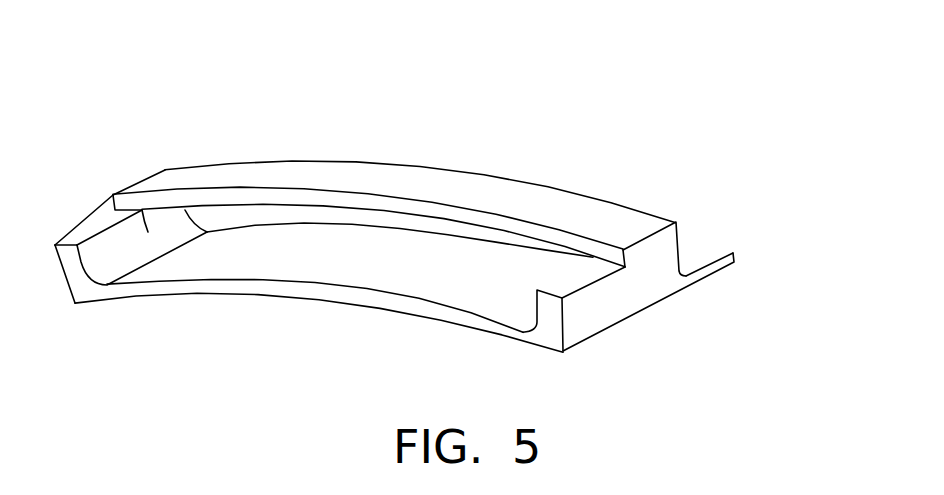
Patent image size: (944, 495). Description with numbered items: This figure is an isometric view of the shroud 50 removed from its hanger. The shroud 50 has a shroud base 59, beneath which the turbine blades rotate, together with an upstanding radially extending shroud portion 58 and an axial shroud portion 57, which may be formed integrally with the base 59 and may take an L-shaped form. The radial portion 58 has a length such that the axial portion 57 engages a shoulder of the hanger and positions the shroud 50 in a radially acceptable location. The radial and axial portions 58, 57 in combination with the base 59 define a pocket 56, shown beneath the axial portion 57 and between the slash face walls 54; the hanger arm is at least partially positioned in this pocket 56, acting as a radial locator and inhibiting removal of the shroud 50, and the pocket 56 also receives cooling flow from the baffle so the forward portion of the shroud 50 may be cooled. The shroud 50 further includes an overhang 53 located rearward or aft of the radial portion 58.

The shroud 50 is at (317, 142).
The overhang 53 is at (720, 266).
The slash face walls 54 is at (603, 313).
The pocket 56 is at (437, 227).
The axial shroud portion 57 is at (477, 185).
The upstanding shroud portion 58 is at (682, 254).
The shroud base 59 is at (663, 292).